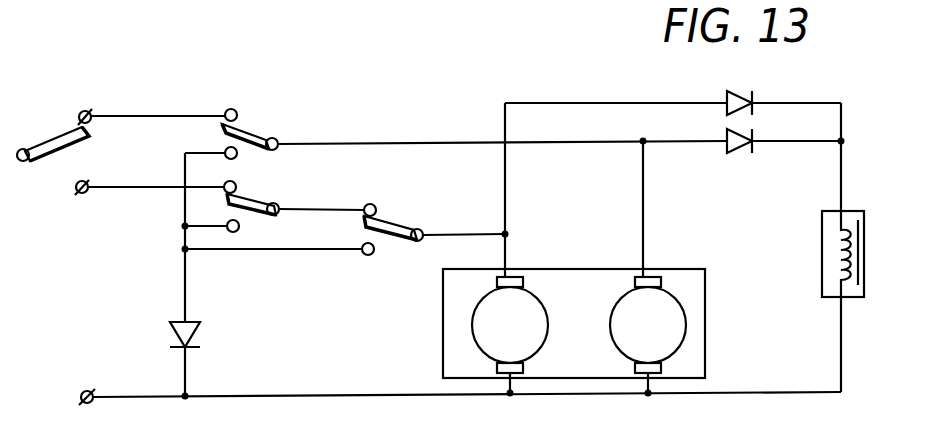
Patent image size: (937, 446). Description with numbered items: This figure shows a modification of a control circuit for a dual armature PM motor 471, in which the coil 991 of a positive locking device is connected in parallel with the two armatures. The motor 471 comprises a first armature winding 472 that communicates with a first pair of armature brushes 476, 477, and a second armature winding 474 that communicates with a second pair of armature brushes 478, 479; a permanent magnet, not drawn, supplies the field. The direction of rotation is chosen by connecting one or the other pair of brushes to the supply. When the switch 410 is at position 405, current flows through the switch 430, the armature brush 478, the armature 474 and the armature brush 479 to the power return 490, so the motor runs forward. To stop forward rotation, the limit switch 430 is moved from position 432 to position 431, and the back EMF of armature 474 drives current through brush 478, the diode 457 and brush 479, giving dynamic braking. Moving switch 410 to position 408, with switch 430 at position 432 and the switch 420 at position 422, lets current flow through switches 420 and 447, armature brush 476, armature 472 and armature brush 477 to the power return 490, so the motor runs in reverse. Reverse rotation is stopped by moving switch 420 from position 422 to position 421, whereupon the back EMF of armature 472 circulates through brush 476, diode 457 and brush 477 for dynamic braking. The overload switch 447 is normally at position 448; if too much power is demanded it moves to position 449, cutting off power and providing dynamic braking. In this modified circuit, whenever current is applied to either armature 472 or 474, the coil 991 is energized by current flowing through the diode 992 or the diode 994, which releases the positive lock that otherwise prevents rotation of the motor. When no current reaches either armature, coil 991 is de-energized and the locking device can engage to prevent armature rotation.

The switch position 405 is at (103, 84).
The switch 410 is at (22, 162).
The switch position 408 is at (81, 193).
The switch position 432 is at (233, 109).
The switch 430 is at (276, 138).
The switch position 431 is at (226, 150).
The switch position 422 is at (234, 184).
The switch 420 is at (279, 207).
The switch position 421 is at (240, 228).
The switch position 448 is at (373, 205).
The switch position 449 is at (369, 255).
The switch 447 is at (417, 242).
The diode 457 is at (198, 332).
The power return 490 is at (86, 390).
The dual armature PM motor 471 is at (692, 268).
The first armature winding 472 is at (472, 322).
The second armature winding 474 is at (685, 313).
The armature brush 476 is at (521, 276).
The armature brush 477 is at (522, 369).
The armature brush 478 is at (643, 276).
The armature brush 479 is at (660, 370).
The diode 992 is at (757, 66).
The diode 994 is at (745, 152).
The coil 991 is at (832, 298).